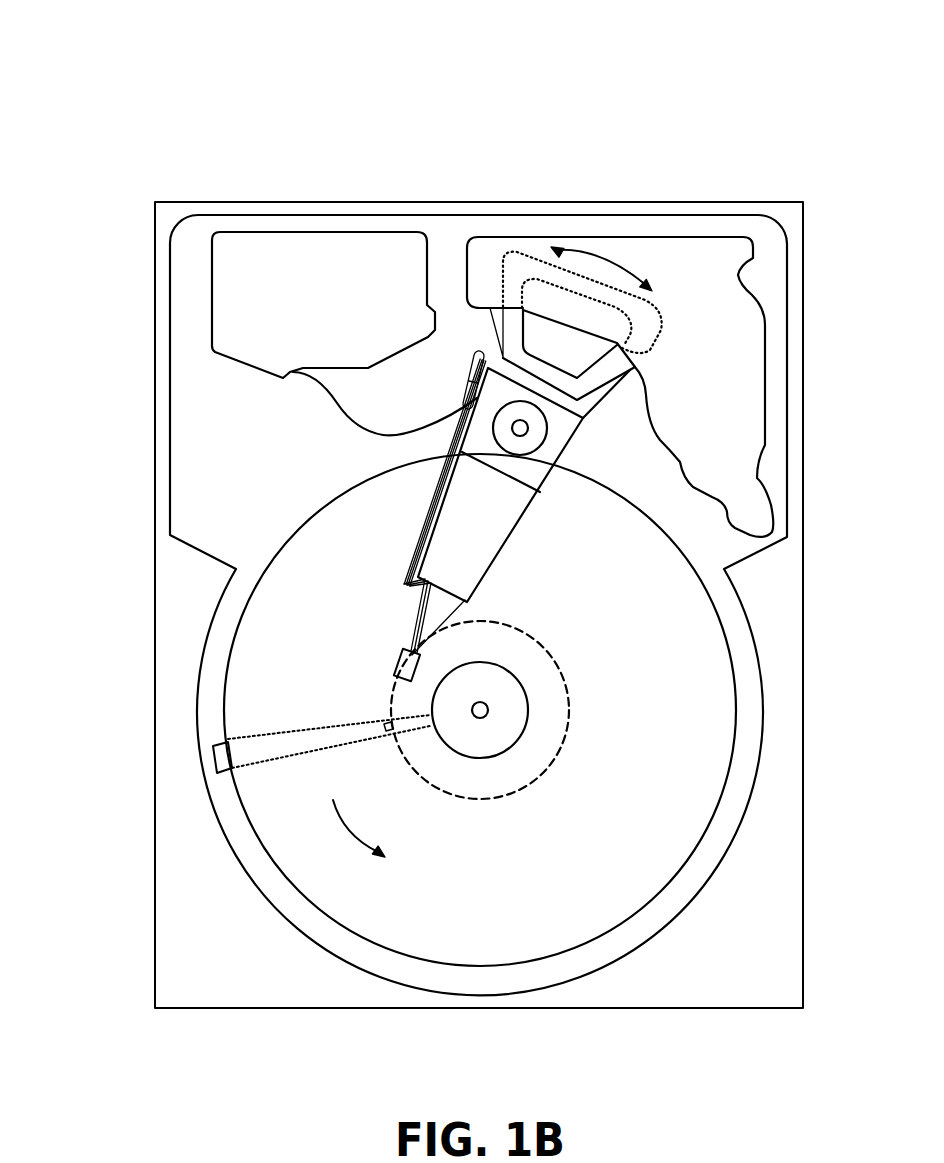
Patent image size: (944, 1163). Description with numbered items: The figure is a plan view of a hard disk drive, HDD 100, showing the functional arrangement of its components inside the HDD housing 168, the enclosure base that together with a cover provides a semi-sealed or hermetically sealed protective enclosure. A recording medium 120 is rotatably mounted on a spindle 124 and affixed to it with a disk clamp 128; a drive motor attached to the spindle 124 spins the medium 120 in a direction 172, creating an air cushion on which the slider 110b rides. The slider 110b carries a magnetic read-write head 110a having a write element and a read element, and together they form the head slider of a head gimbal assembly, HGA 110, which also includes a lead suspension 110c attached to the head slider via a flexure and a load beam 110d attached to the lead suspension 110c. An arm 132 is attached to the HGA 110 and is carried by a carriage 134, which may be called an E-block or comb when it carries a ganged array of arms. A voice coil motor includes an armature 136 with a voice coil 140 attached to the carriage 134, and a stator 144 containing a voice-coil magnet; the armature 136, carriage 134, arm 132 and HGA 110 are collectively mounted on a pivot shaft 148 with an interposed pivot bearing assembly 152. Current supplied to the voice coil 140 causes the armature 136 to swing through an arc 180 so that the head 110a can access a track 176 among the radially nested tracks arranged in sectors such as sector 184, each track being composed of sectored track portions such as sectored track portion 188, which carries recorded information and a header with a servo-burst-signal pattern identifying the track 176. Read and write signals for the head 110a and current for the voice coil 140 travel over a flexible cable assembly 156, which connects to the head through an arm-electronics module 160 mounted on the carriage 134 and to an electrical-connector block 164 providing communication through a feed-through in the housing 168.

The hard disk drive 100 is at (86, 80).
The head gimbal assembly 110 is at (82, 512).
The magnetic read-write head 110a is at (413, 652).
The slider 110b is at (421, 626).
The lead suspension 110c is at (428, 601).
The load beam 110d is at (406, 585).
The recording medium 120 is at (663, 662).
The spindle 124 is at (482, 710).
The disk clamp 128 is at (512, 735).
The arm 132 is at (473, 545).
The carriage 134 is at (537, 462).
The armature 136 is at (490, 308).
The voice coil 140 is at (513, 320).
The stator 144 is at (733, 330).
The pivot shaft 148 is at (527, 428).
The pivot bearing assembly 152 is at (530, 440).
The flexible cable assembly 156 is at (333, 407).
The arm-electronics module 160 is at (472, 397).
The electrical-connector block 164 is at (237, 303).
The HDD housing 168 is at (785, 213).
The direction 172 is at (372, 840).
The track 176 is at (556, 668).
The arc 180 is at (598, 262).
The sector 184 is at (213, 757).
The sectored track portion 188 is at (383, 726).